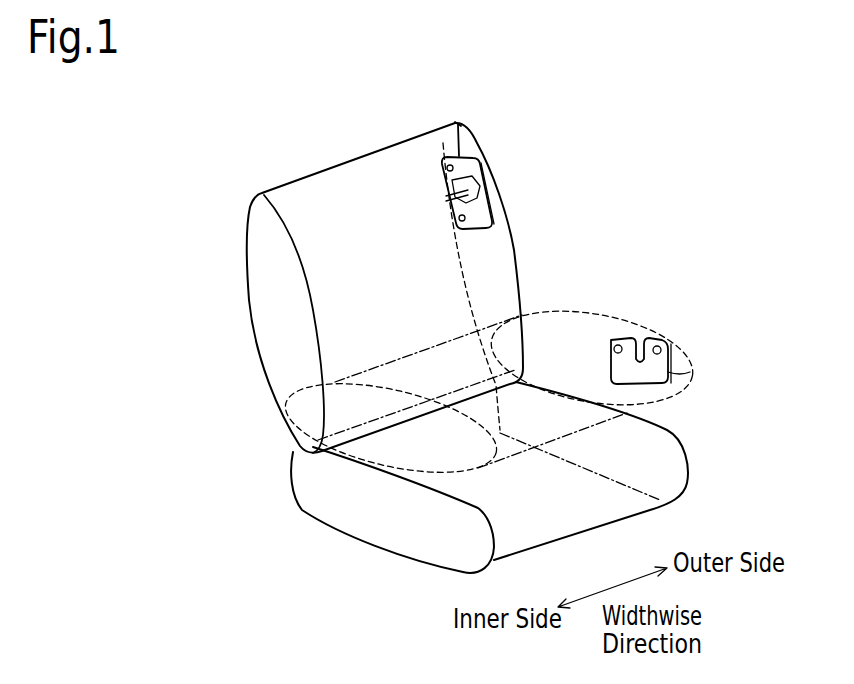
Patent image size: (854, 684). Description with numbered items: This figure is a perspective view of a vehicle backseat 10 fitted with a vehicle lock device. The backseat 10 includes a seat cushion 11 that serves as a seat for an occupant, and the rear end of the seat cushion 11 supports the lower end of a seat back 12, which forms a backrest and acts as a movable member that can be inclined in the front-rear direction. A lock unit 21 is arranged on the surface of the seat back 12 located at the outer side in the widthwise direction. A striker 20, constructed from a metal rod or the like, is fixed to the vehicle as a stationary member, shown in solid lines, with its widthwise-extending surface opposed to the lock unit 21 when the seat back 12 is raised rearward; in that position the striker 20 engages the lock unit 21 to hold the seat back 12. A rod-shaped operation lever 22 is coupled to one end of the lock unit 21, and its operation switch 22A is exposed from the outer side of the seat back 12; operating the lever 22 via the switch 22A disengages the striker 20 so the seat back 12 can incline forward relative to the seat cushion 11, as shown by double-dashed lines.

The backseat 10 is at (220, 410).
The seat cushion 11 is at (292, 472).
The seat back 12 is at (280, 403).
The striker 20 is at (447, 193).
The lock unit 21 is at (484, 160).
The operation lever 22 is at (467, 130).
The operation switch 22A is at (457, 121).